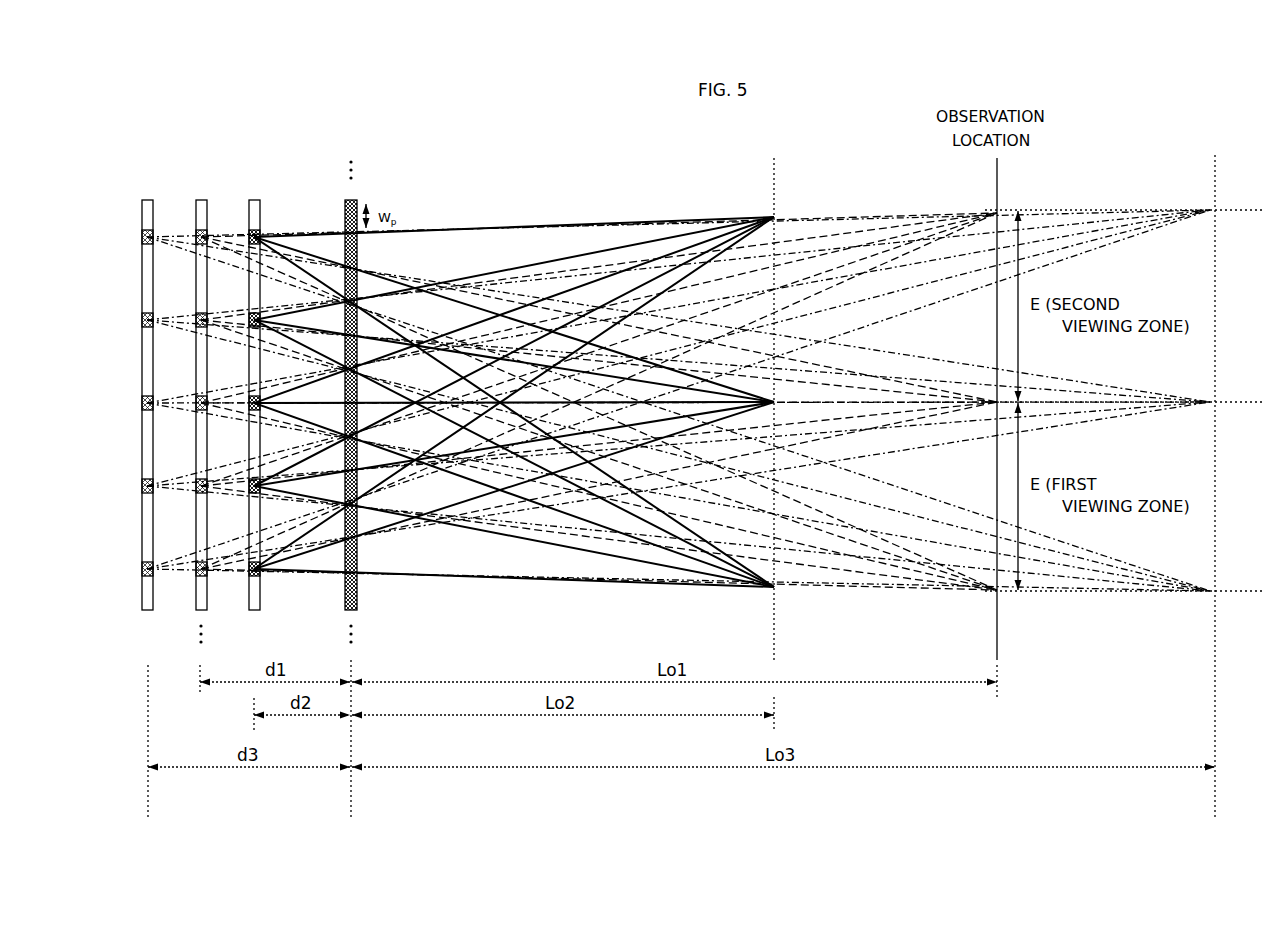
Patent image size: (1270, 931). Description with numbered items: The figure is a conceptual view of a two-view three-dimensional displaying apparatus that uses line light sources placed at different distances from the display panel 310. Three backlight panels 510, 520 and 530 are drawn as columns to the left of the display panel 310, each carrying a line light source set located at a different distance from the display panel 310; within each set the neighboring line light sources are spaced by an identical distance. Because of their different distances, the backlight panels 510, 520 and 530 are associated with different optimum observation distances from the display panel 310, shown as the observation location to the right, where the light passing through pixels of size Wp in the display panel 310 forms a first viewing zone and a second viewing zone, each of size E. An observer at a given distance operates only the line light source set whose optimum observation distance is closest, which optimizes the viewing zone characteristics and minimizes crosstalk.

The backlight panel 510 is at (148, 392).
The backlight panel 520 is at (201, 409).
The backlight panel 530 is at (254, 392).
The display panel 310 is at (350, 388).